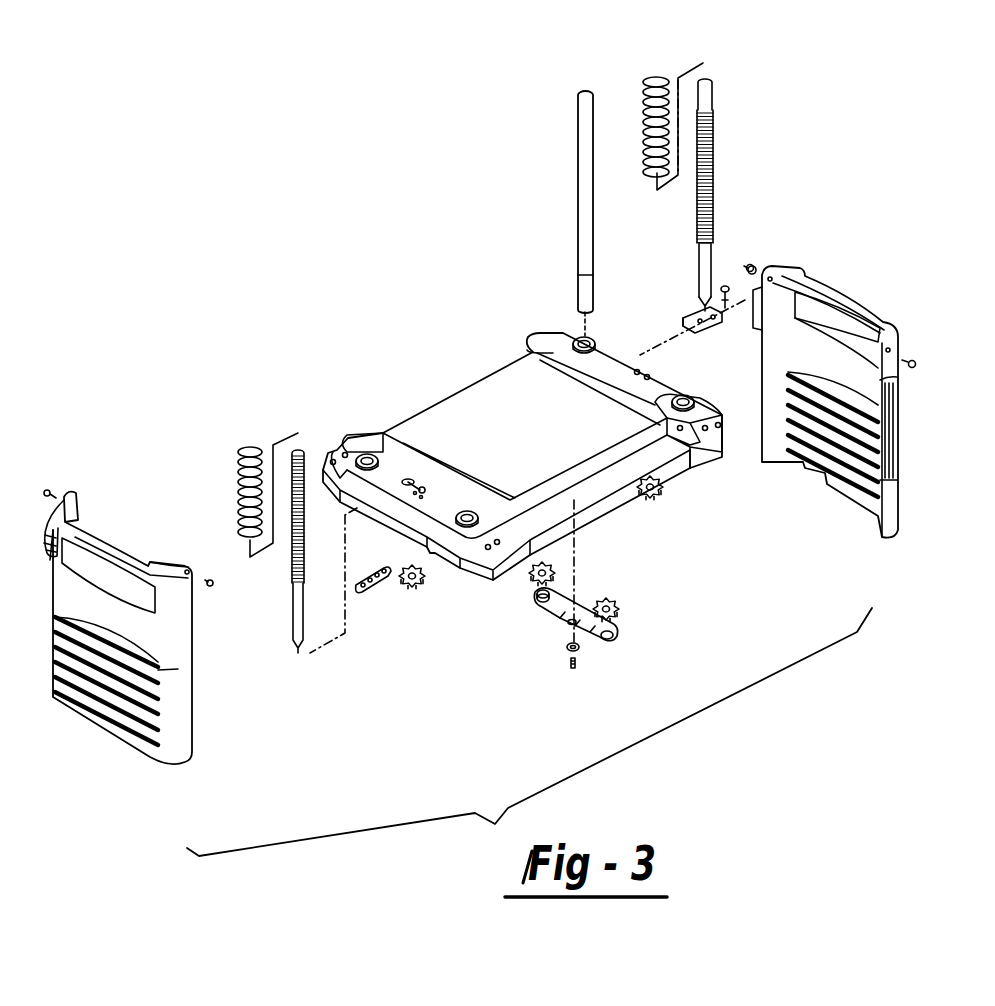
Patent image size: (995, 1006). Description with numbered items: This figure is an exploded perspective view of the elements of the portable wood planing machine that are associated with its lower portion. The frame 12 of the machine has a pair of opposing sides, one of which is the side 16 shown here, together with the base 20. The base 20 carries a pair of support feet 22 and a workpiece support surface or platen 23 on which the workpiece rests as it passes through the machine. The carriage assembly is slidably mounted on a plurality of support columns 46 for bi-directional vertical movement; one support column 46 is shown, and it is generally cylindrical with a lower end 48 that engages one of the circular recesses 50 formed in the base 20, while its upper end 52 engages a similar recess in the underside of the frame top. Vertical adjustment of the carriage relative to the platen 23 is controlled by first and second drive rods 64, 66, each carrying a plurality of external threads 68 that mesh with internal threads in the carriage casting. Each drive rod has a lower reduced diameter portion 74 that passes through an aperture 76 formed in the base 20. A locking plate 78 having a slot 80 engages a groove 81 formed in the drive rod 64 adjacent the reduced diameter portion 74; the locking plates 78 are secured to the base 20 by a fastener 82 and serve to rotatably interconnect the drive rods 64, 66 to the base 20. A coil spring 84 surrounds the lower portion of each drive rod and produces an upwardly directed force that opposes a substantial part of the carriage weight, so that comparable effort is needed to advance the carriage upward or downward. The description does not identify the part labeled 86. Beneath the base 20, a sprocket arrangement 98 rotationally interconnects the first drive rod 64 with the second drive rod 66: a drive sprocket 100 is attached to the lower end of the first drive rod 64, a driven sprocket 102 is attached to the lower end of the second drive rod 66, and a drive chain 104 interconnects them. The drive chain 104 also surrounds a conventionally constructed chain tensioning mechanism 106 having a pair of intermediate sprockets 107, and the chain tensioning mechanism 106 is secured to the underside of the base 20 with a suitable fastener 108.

The frame 12 is at (112, 715).
The side 16 is at (822, 300).
The base 20 is at (556, 430).
The support feet 22 is at (712, 462).
The workpiece support surface or platen 23 is at (517, 378).
The support column 46 is at (546, 211).
The lower end 48 is at (578, 275).
The circular recesses 50 is at (590, 335).
The upper ends 52 is at (578, 116).
The first drive rod 64 is at (718, 193).
The second drive rod 66 is at (286, 592).
The external threads 68 is at (714, 140).
The lower reduced diameter portion 74 is at (706, 285).
The aperture 76 is at (600, 390).
The locking plate 78 is at (408, 472).
The slot 80 is at (740, 312).
The groove 81 is at (696, 290).
The fastener 82 is at (730, 275).
The coil spring 84 is at (652, 76).
The screw head 86 is at (708, 84).
The sprocket arrangement 98 is at (584, 613).
The drive sprocket 100 is at (662, 495).
The driven sprocket 102 is at (410, 590).
The drive chain 104 is at (360, 590).
The chain tensioning mechanism 106 is at (630, 628).
The intermediate sprockets 107 is at (554, 572).
The fastener 108 is at (570, 665).